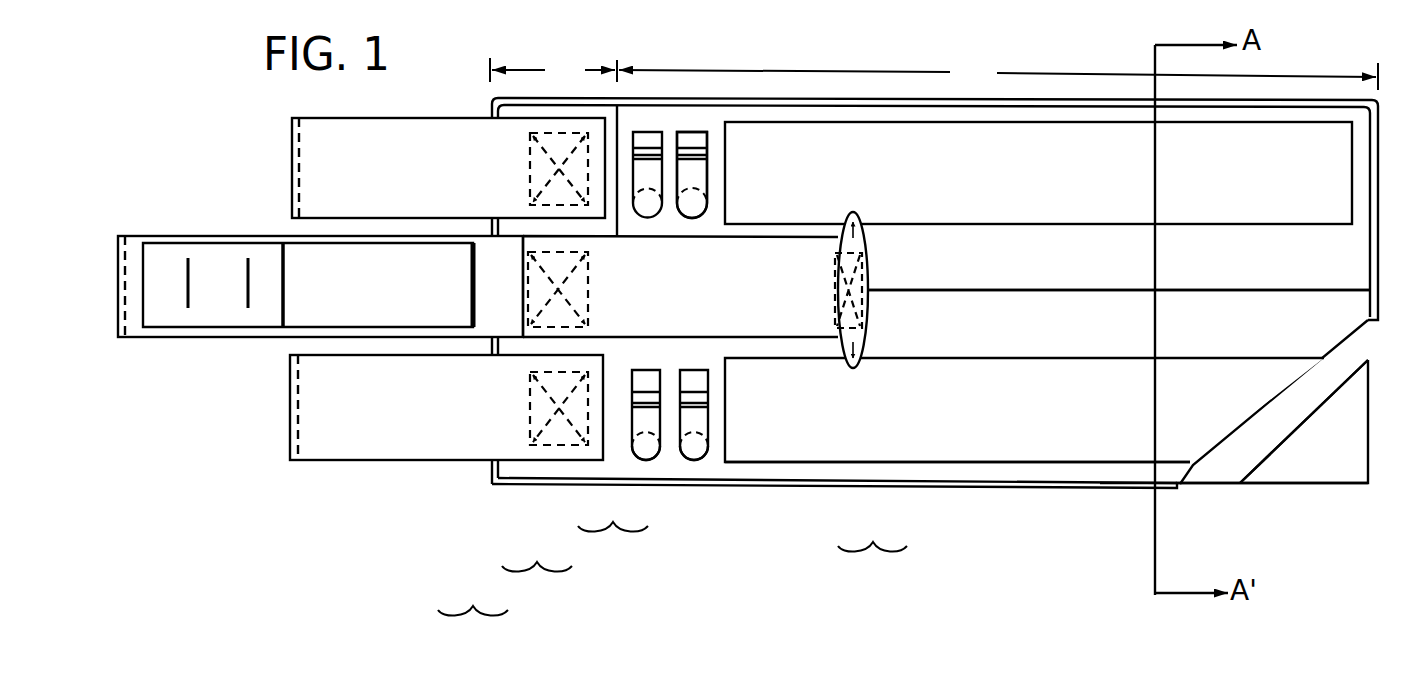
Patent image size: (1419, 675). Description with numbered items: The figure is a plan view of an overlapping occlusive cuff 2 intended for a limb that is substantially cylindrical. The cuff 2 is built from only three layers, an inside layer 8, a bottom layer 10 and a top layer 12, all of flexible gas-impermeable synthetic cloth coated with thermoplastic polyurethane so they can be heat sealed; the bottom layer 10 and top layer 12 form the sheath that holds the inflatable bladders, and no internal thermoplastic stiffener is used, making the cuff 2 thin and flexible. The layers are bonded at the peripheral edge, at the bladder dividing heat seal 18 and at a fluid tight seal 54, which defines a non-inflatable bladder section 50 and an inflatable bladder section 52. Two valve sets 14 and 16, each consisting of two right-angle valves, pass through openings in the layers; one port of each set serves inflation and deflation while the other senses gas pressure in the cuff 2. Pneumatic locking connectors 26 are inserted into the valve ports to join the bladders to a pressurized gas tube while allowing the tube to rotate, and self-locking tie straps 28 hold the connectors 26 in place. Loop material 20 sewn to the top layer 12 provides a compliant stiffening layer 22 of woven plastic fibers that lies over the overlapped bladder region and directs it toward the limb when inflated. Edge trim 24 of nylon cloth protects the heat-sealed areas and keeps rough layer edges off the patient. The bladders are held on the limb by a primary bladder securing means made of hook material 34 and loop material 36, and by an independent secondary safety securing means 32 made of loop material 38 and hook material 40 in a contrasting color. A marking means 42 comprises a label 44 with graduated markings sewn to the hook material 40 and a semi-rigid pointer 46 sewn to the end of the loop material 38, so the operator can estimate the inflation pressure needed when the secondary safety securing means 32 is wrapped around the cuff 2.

The cuff 2 is at (540, 468).
The inside layer 8 is at (1283, 440).
The bottom layer 10 is at (1352, 458).
The top layer 12 is at (880, 470).
The valve set 14 is at (647, 173).
The valve set 16 is at (693, 452).
The bladder dividing heat seal 18 is at (1035, 292).
The loop material 20 is at (865, 435).
The compliant stiffening layer 22 is at (872, 559).
The edge trim 24 is at (1090, 485).
The pneumatic locking connector 26 is at (648, 130).
The self-locking thermoplastic tie strap 28 is at (708, 168).
The secondary safety securing means 32 is at (575, 555).
The hook material 34 is at (290, 174).
The loop material 36 is at (790, 447).
The loop material 38 is at (620, 308).
The hook material 40 is at (493, 300).
The marking means 42 is at (320, 439).
The label 44 is at (217, 315).
The pointer 46 is at (848, 345).
The non-inflatable bladder section 50 is at (553, 69).
The inflatable bladder section 52 is at (998, 71).
The fluid tight seal 54 is at (617, 108).